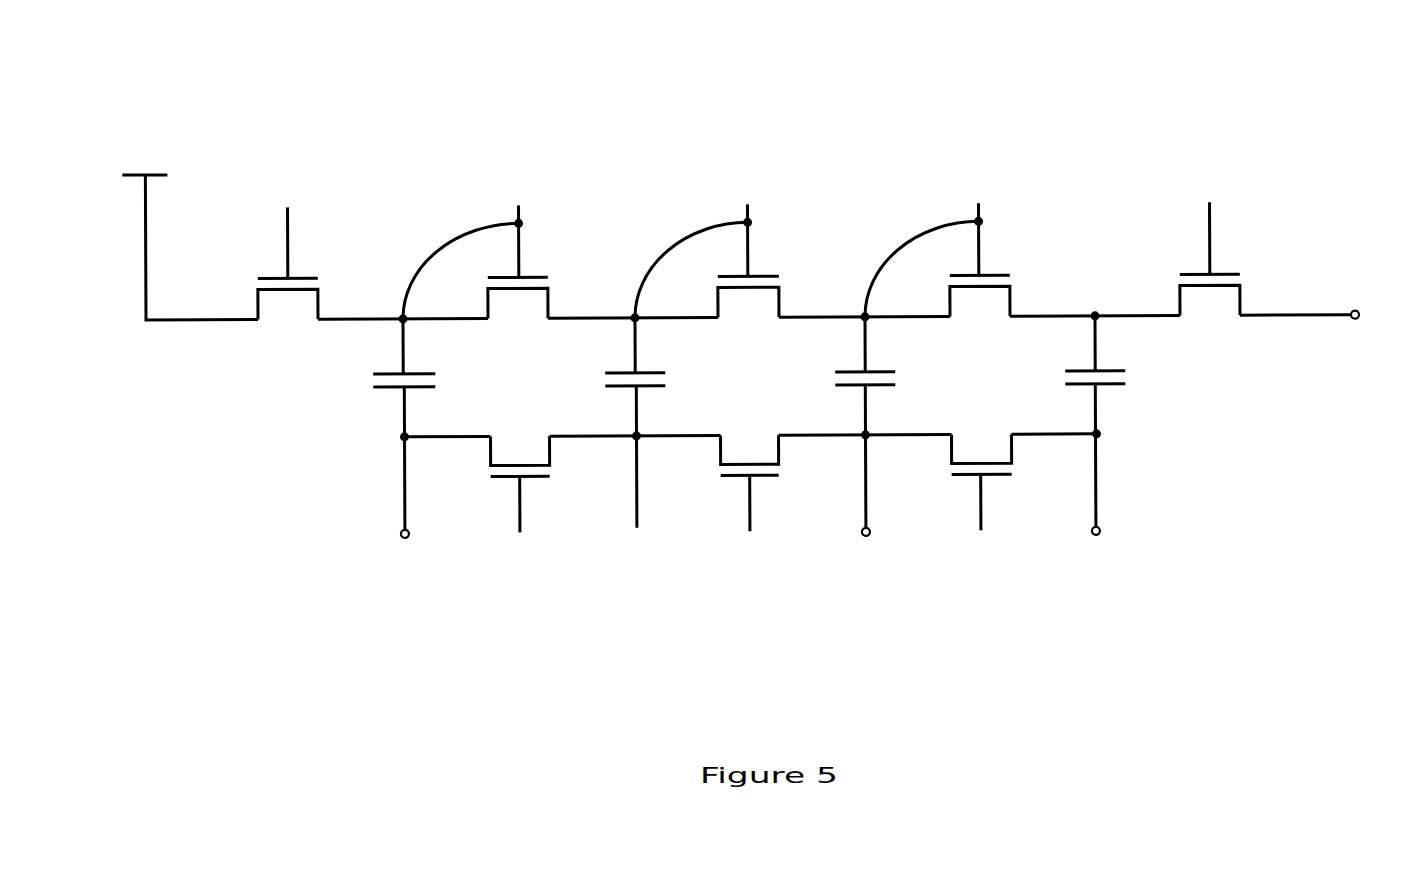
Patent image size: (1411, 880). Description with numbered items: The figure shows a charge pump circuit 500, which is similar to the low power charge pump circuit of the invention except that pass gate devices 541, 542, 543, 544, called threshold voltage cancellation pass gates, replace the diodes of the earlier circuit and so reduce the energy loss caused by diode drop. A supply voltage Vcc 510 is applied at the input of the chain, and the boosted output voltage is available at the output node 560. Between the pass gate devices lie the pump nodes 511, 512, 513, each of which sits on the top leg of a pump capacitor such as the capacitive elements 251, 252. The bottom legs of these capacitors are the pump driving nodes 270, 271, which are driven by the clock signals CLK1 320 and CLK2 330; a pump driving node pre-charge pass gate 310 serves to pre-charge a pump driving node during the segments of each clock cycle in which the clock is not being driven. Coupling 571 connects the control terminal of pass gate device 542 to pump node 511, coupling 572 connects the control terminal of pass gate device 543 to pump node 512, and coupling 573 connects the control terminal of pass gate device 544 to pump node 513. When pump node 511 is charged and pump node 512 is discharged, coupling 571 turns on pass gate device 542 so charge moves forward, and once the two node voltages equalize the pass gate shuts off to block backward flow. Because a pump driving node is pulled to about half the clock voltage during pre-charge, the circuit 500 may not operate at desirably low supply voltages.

The charge pump circuit 500 is at (239, 55).
The Vcc 510 is at (167, 145).
The pass gate device 541 is at (289, 317).
The pass gate device 542 is at (518, 315).
The pass gate device 543 is at (750, 315).
The pass gate device 544 is at (982, 315).
The pump node 511 is at (408, 323).
The pump node 512 is at (640, 323).
The pump node 513 is at (870, 323).
The coupling 571 is at (457, 242).
The coupling 572 is at (685, 240).
The coupling 573 is at (916, 240).
The capacitive element 251 is at (372, 381).
The capacitive element 252 is at (601, 381).
The pump driving node 270 is at (397, 442).
The pump driving node 271 is at (641, 445).
The pass gate 310 is at (484, 472).
The CLK1 320 is at (400, 546).
The CLK2 330 is at (630, 536).
The output node 560 is at (1292, 263).